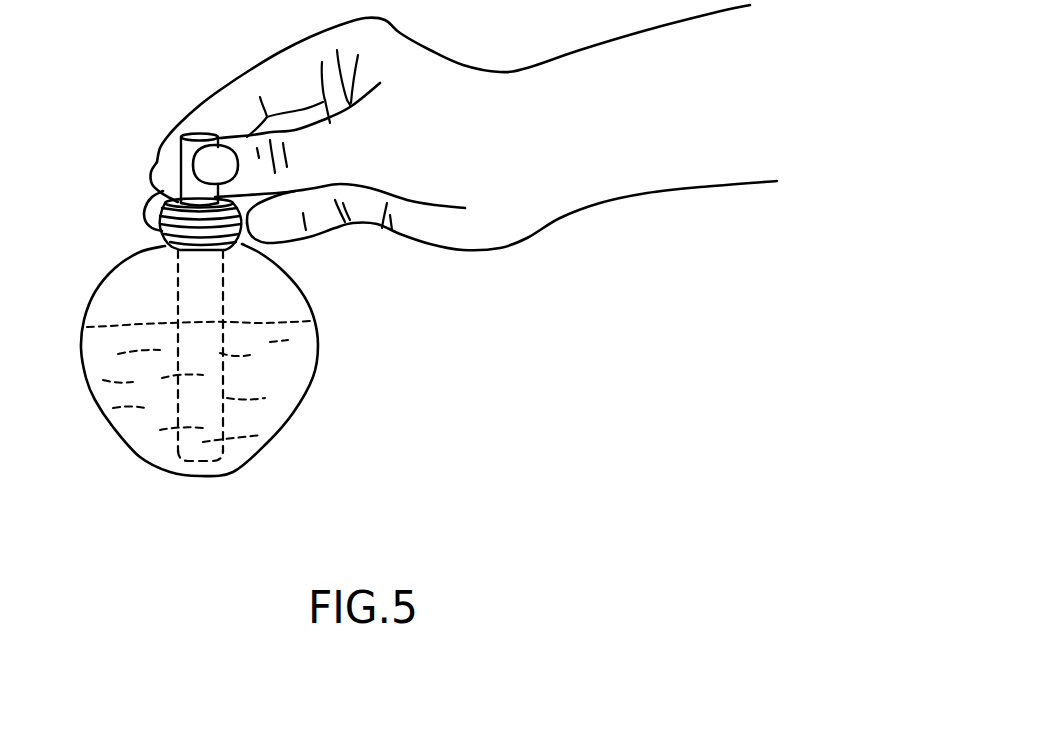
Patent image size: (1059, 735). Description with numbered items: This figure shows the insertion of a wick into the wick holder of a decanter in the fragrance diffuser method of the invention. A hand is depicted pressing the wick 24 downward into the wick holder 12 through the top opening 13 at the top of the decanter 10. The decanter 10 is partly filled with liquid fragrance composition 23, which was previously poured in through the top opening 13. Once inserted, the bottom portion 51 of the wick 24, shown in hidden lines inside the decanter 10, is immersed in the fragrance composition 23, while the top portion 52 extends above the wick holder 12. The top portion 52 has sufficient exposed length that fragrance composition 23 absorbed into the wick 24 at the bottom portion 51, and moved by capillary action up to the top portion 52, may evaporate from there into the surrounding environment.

The decanter 10 is at (84, 318).
The wick holder 12 is at (163, 232).
The top opening 13 is at (167, 203).
The fragrance composition 23 is at (270, 381).
The wick 24 is at (203, 113).
The bottom portion 51 is at (178, 412).
The top portion 52 is at (181, 165).